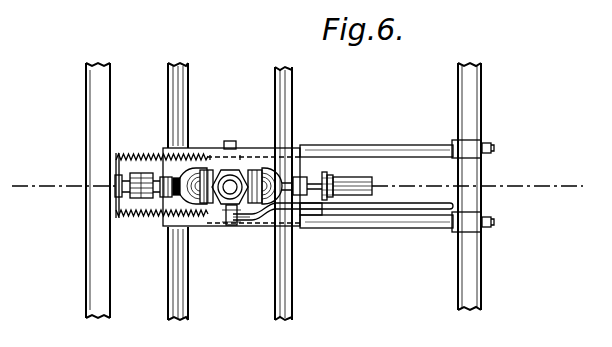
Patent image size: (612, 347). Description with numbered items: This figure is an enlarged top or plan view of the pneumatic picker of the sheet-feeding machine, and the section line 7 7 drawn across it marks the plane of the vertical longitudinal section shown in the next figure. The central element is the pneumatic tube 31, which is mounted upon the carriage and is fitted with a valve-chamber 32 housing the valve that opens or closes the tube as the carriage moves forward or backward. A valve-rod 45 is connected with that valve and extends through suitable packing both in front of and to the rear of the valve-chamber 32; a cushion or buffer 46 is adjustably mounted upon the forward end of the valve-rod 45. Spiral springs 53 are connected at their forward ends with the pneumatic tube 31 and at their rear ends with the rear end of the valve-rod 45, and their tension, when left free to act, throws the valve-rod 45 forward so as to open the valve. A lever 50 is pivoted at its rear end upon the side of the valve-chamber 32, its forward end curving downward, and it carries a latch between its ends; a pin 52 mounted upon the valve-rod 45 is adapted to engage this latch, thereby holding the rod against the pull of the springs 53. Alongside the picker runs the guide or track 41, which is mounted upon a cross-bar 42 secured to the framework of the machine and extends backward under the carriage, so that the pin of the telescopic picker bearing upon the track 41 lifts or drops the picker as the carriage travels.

The section line 7 7 is at (299, 189).
The pneumatic tube 31 is at (233, 175).
The valve-chamber 32 is at (193, 168).
The guide or track 41 is at (400, 130).
The cross-bar 42 is at (532, 119).
The valve-rod 45 is at (310, 178).
The cushion or buffer 46 is at (420, 185).
The lever 50 is at (315, 204).
The pin 52 is at (328, 208).
The spiral springs 53 is at (138, 157).